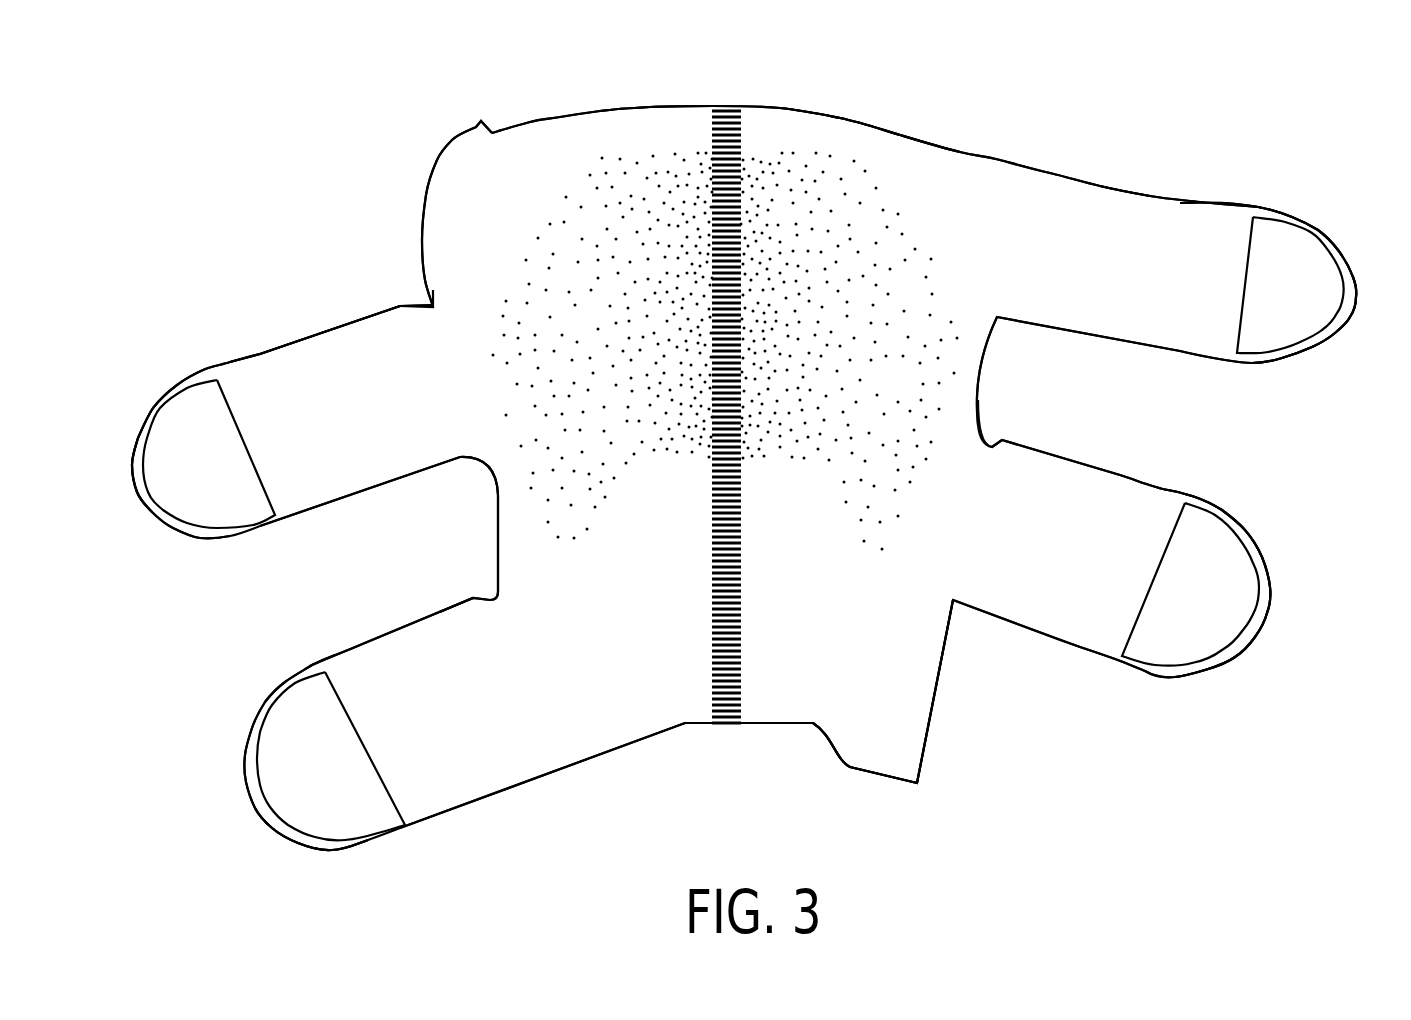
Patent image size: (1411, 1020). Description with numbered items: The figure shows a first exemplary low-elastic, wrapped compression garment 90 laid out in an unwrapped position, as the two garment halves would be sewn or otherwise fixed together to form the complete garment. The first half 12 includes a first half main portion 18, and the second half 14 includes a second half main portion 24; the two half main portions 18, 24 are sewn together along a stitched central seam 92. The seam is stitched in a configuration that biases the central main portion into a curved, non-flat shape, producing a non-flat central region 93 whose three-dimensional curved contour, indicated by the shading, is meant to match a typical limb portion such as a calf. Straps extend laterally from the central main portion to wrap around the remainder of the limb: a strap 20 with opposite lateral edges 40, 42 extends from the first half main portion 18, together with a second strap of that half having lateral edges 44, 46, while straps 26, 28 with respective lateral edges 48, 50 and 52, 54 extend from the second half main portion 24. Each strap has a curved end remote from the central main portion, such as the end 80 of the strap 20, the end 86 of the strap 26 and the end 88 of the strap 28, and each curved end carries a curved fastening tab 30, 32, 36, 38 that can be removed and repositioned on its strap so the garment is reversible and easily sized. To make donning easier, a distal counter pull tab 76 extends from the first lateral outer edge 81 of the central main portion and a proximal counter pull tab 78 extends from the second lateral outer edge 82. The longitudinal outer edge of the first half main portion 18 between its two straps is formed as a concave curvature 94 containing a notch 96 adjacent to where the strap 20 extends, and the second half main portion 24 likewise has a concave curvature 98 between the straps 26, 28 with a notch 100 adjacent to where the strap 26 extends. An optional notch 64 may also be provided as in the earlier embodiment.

The first half 12 is at (548, 816).
The second half 14 is at (852, 810).
The first half main portion 18 is at (467, 178).
The strap 20 is at (362, 660).
The second half main portion 24 is at (940, 185).
The strap 26 is at (1117, 225).
The strap 28 is at (1040, 622).
The fastening tab 30 is at (173, 418).
The fastening tab 32 is at (286, 715).
The fastening tab 36 is at (1316, 265).
The fastening tab 38 is at (1233, 560).
The lateral edge 40 is at (333, 336).
The lateral edge 42 is at (362, 503).
The lateral edge 44 is at (422, 600).
The lateral edge 46 is at (438, 818).
The lateral edge 48 is at (1195, 205).
The lateral edge 50 is at (1195, 360).
The lateral edge 52 is at (1088, 456).
The lateral edge 54 is at (1088, 665).
The notch 64 is at (435, 310).
The distal counter pull tab 76 is at (481, 120).
The proximal counter pull tab 78 is at (916, 782).
The strap end 80 is at (134, 465).
The first lateral outer edge 81 is at (655, 106).
The second lateral outer edge 82 is at (755, 725).
The strap end 86 is at (1357, 288).
The strap end 88 is at (1272, 637).
The compression garment 90 is at (899, 84).
The central seam 92 is at (730, 120).
The non-flat central region 93 is at (627, 215).
The concave curvature 94 is at (492, 490).
The notch 96 is at (497, 601).
The concave curvature 98 is at (977, 385).
The notch 100 is at (990, 450).